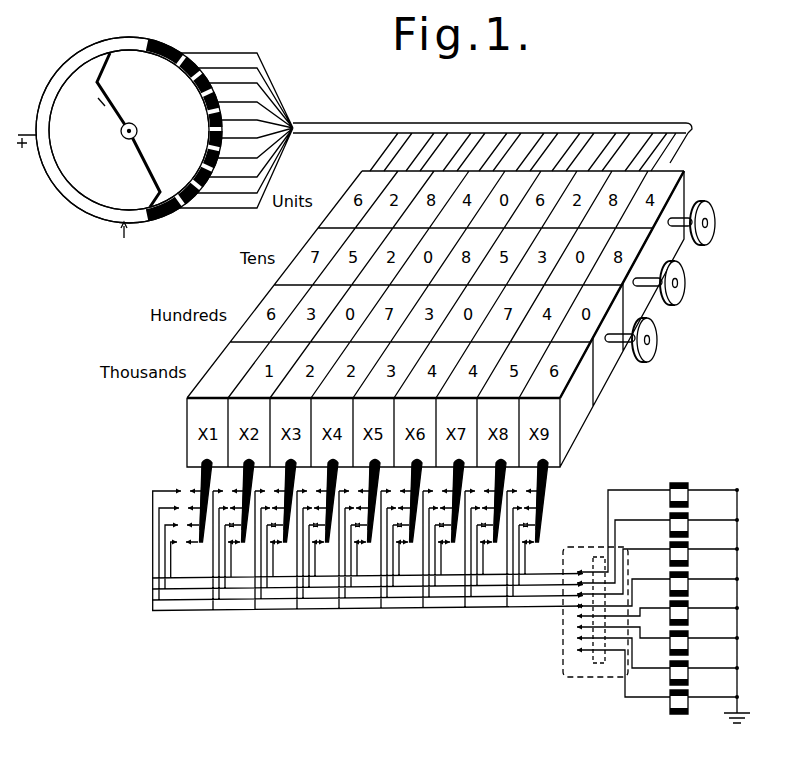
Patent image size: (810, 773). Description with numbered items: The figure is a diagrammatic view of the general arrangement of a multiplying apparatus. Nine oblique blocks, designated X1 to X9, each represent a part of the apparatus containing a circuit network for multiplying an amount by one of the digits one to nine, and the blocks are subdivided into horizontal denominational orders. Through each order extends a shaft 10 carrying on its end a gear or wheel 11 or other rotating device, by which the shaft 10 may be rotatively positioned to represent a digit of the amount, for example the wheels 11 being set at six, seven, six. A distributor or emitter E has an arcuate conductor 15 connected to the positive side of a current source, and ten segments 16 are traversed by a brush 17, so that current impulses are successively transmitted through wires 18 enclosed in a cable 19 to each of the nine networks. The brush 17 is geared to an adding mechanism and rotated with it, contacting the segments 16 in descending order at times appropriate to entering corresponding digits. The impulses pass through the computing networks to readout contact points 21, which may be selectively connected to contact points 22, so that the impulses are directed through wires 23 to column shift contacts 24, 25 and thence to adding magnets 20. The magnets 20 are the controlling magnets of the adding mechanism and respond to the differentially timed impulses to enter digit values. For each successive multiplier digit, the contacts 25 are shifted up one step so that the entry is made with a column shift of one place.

The shaft 10 is at (668, 279).
The gear or wheel 11 is at (653, 353).
The arcuate conductor 15 is at (62, 183).
The segments 16 is at (205, 150).
The brush 17 is at (104, 101).
The wires 18 is at (264, 118).
The cable 19 is at (513, 125).
The magnets 20 is at (676, 590).
The readout contact points 21 is at (532, 538).
The contact points 22 is at (522, 540).
The wires 23 is at (452, 575).
The column shift contacts 24 is at (582, 605).
The column shift contacts 25 is at (583, 640).